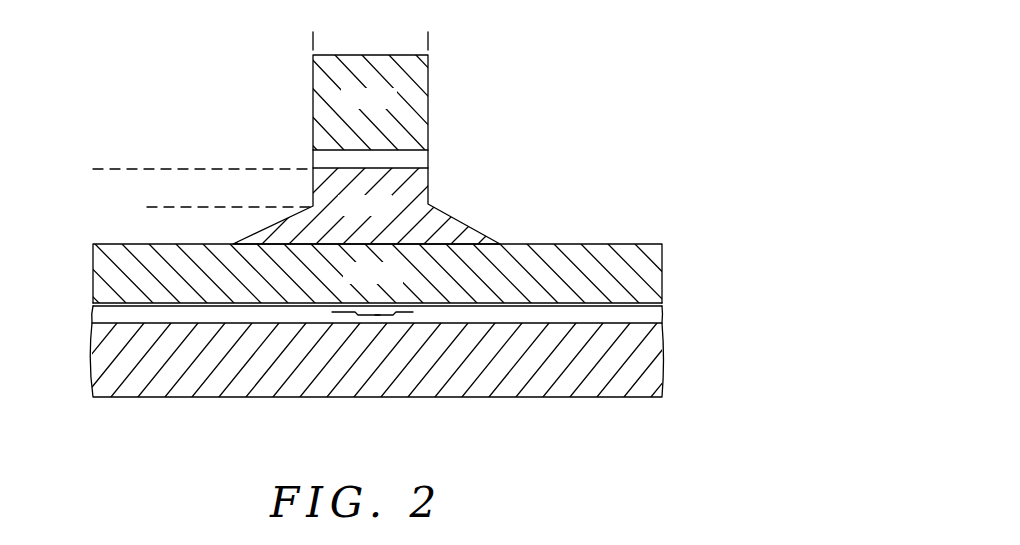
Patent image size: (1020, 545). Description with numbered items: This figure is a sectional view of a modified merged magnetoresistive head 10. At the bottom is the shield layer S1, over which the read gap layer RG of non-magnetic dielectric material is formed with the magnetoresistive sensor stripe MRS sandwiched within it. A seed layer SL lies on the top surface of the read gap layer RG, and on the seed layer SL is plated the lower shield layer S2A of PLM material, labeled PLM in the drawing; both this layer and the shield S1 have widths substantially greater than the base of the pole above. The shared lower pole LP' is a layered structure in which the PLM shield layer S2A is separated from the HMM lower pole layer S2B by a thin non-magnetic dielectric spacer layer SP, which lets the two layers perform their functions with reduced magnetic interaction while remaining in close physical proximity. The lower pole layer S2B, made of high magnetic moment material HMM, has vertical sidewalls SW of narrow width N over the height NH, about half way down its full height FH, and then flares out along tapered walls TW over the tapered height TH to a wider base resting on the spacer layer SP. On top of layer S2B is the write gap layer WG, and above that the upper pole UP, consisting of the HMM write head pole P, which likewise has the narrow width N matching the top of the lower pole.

The merged magnetoresistive head 10 is at (130, 418).
The shield layer S1 is at (100, 357).
The seed layer SL is at (105, 305).
The read gap layer RG is at (645, 318).
The PLM shield layer S2A is at (643, 268).
The PLM material PLM is at (373, 274).
The magnetoresistive sensor stripe MRS is at (378, 316).
The lower pole LP' is at (440, 193).
The high magnetic moment material HMM is at (367, 152).
The write head pole P is at (407, 113).
The upper pole UP is at (500, 115).
The write gap layer WG is at (323, 156).
The vertical sidewalls SW is at (313, 188).
The HMM lower pole layer S2B is at (420, 199).
The tapered walls TW is at (263, 231).
The spacer layer SP is at (497, 243).
The narrow width N is at (428, 40).
The full height FH is at (105, 169).
The narrow-width height NH is at (153, 169).
The tapered height TH is at (153, 207).